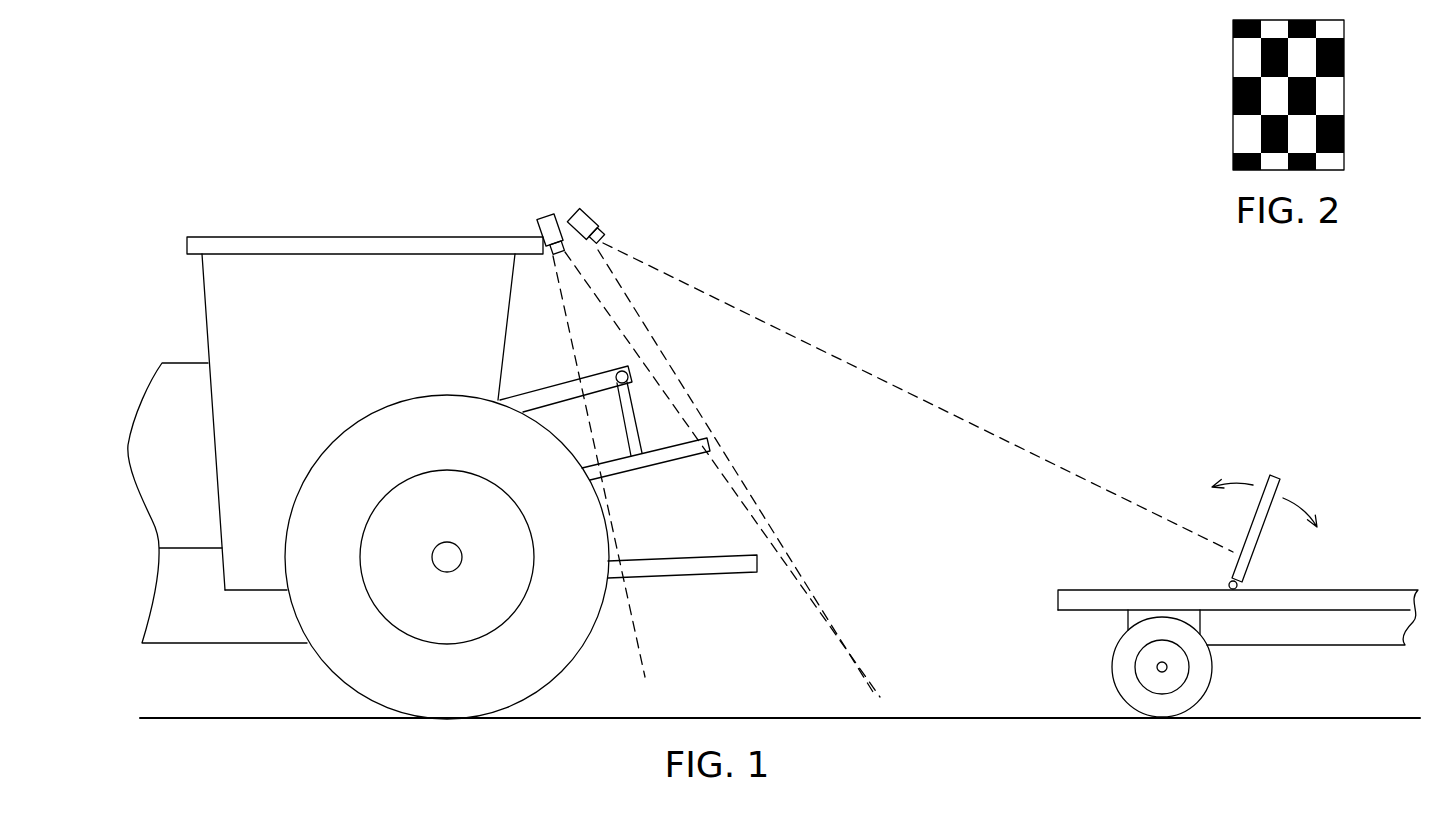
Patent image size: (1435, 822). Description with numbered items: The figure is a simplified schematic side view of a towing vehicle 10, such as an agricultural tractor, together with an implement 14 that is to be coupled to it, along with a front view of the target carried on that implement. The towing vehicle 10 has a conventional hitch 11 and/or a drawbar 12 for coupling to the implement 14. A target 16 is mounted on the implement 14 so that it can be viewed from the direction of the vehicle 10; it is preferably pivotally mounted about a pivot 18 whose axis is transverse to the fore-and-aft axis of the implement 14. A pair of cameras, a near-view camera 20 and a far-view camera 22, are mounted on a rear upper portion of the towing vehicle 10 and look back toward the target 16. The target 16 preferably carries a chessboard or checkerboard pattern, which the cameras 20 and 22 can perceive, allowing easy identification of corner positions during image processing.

The towing vehicle 10 is at (260, 674).
The hitch 11 is at (700, 398).
The drawbar 12 is at (728, 590).
The implement 14 is at (1075, 677).
The target 16 is at (1278, 455).
The pivot 18 is at (1227, 585).
The near-view camera 20 is at (543, 217).
The far-view camera 22 is at (575, 212).